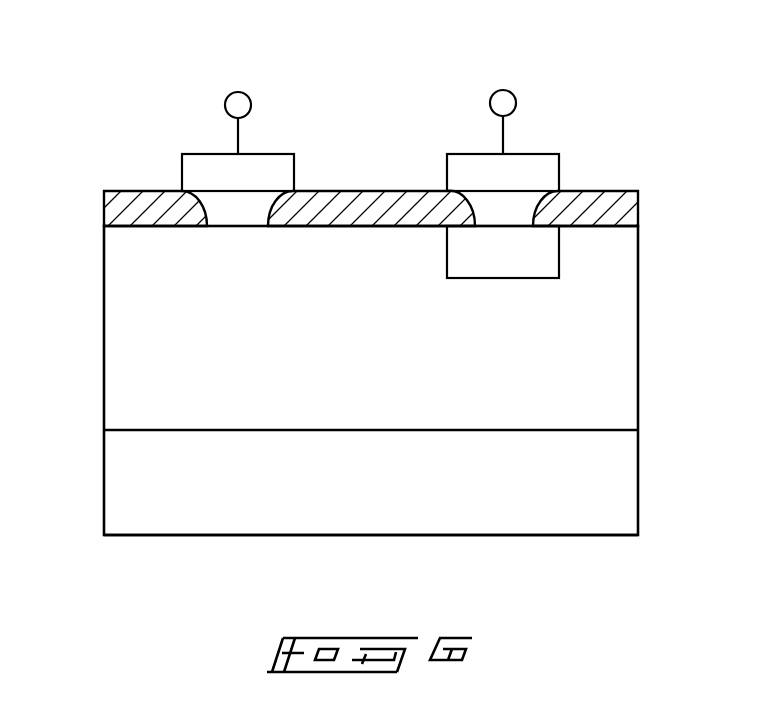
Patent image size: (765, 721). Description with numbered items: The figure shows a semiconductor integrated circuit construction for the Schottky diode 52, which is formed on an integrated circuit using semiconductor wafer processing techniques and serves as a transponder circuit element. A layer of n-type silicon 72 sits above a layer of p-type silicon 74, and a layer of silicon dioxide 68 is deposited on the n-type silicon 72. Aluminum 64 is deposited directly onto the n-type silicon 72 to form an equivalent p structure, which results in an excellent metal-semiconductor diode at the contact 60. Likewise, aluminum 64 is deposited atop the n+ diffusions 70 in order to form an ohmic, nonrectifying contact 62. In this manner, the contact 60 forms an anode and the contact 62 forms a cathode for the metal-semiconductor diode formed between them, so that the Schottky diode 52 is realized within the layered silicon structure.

The Schottky diode 52 is at (79, 109).
The contact 60 is at (243, 102).
The ohmic contact 62 is at (497, 103).
The aluminum 64 is at (270, 170).
The silicon dioxide layer 68 is at (143, 210).
The n+ diffusions 70 is at (499, 253).
The n-type silicon layer 72 is at (305, 350).
The p-type silicon layer 74 is at (385, 496).